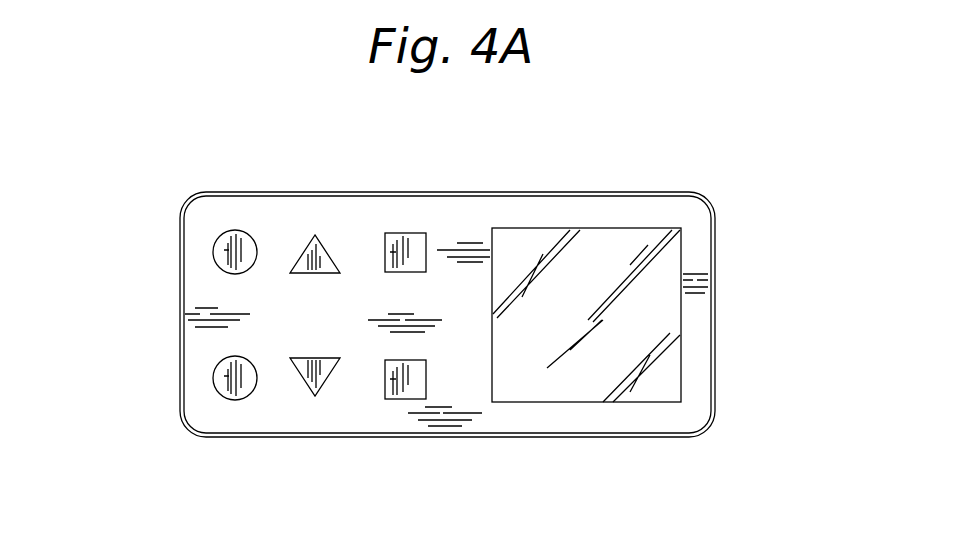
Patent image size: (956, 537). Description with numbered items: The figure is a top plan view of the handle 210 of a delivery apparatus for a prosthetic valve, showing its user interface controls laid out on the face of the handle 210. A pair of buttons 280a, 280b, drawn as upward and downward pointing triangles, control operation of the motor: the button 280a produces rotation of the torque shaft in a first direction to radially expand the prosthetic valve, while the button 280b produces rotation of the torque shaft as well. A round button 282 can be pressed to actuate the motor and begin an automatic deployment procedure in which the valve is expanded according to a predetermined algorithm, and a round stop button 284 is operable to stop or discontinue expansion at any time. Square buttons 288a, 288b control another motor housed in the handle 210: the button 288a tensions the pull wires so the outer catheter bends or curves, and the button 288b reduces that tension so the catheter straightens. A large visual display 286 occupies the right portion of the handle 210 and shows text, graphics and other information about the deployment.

The handle 210 is at (365, 194).
The button 280a is at (308, 250).
The button 280b is at (302, 374).
The button 282 is at (217, 248).
The stop button 284 is at (222, 383).
The visual display 286 is at (572, 402).
The button 288a is at (408, 240).
The button 288b is at (404, 399).